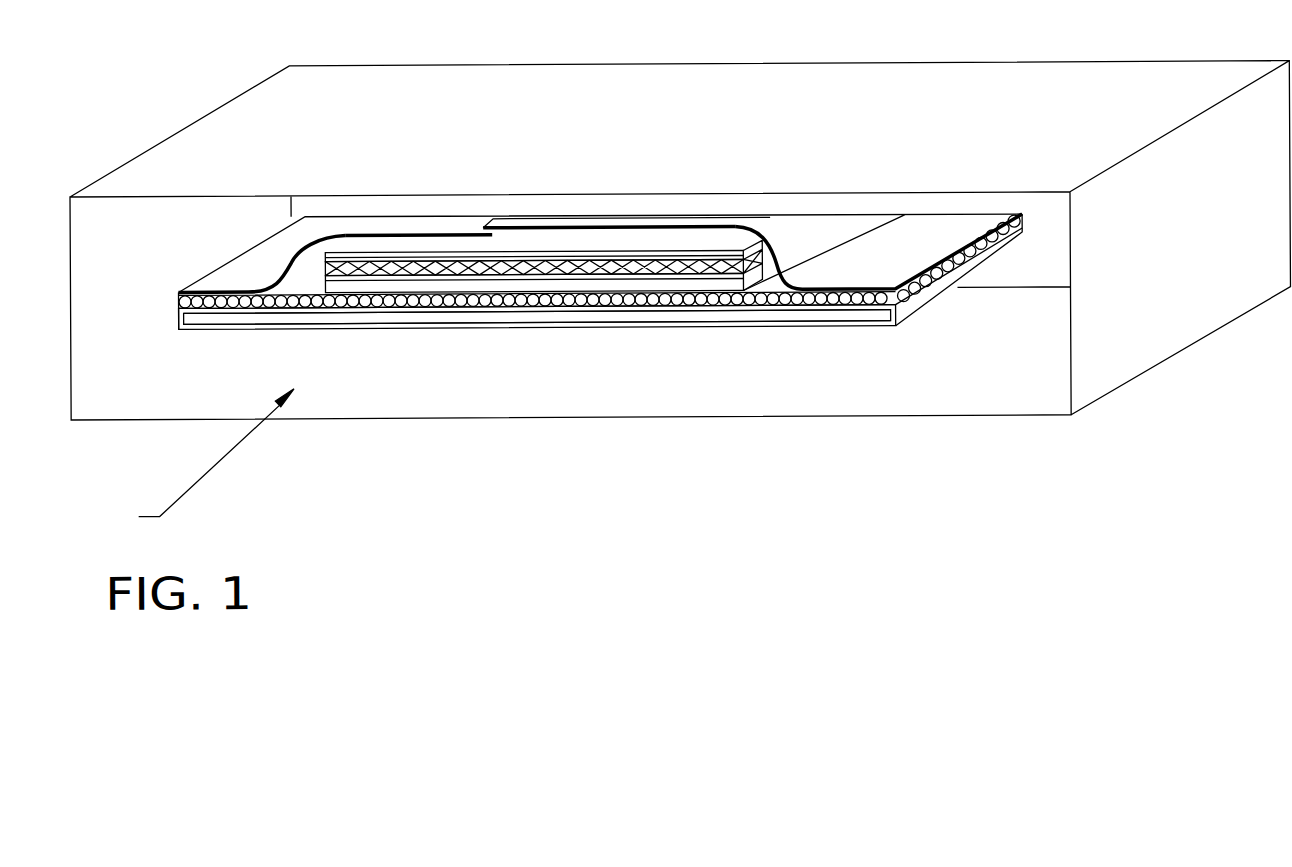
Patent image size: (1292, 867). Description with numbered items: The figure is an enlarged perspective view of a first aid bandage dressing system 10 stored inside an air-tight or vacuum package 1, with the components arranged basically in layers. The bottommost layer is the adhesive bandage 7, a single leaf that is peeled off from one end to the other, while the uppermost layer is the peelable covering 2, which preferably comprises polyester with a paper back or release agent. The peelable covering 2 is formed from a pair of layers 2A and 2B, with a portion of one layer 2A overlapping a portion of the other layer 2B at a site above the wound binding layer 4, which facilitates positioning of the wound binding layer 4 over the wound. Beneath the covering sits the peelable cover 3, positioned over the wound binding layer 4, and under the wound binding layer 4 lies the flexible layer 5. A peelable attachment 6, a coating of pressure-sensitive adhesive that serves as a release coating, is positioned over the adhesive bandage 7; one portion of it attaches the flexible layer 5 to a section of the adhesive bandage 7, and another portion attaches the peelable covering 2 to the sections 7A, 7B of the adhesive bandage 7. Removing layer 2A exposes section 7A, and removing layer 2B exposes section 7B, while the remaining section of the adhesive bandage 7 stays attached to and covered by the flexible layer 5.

The air-tight or vacuum package 1 is at (70, 224).
The peelable covering 2 is at (758, 235).
The layer of the peelable covering 2A is at (565, 229).
The layer of the peelable covering 2B is at (415, 236).
The peelable cover 3 is at (762, 256).
The wound binding layer 4 is at (325, 265).
The flexible layer 5 is at (325, 283).
The peelable attachment 6 is at (178, 301).
The adhesive bandage 7 is at (897, 318).
The section of the adhesive bandage 7A is at (850, 317).
The section of the adhesive bandage 7B is at (247, 329).
The bandage dressing system 10 is at (189, 463).